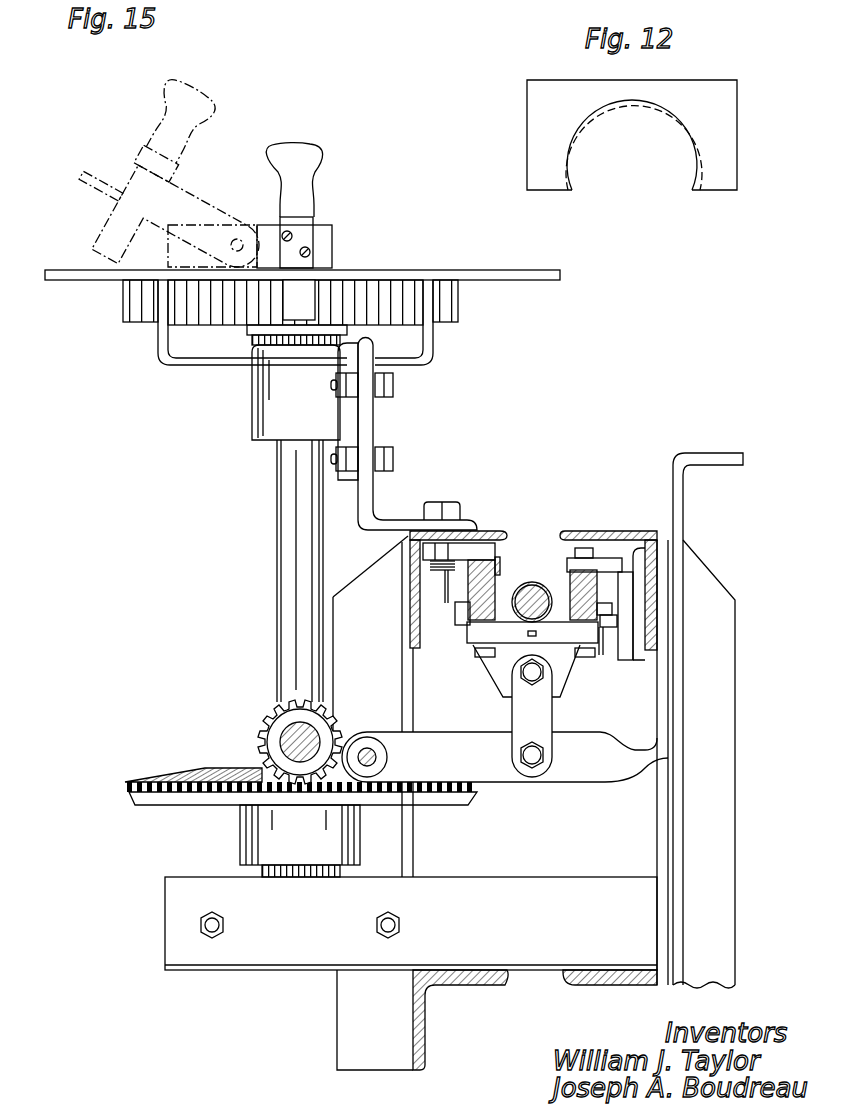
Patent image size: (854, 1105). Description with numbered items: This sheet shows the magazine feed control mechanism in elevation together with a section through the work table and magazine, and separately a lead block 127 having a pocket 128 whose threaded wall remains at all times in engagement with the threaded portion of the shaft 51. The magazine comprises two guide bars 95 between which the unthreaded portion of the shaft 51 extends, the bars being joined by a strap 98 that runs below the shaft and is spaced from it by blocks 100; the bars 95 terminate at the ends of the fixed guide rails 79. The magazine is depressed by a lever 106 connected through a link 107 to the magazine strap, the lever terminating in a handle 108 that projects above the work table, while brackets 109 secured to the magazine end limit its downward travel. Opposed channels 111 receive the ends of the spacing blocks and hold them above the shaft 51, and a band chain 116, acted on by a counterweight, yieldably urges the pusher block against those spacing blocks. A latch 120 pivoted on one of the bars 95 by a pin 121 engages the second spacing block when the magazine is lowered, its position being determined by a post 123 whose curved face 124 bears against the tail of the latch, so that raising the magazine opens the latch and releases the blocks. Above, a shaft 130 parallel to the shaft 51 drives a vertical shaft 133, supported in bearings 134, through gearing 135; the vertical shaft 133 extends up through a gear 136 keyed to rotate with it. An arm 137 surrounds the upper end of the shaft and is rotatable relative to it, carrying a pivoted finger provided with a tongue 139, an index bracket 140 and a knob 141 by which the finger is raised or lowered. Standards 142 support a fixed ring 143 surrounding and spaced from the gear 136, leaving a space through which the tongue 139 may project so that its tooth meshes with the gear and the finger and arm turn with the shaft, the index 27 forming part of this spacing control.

In FIG. 15, the index 27 is at (420, 255).
In FIG. 15, the shaft 51 is at (530, 592).
In FIG. 15, the guide rails 79 is at (458, 629).
In FIG. 15, the guide bars 95 is at (455, 620).
In FIG. 15, the strap 98 is at (490, 672).
In FIG. 15, the blocks 100 is at (520, 633).
In FIG. 15, the lever 106 is at (505, 757).
In FIG. 15, the link 107 is at (555, 718).
In FIG. 15, the handle 108 is at (715, 456).
In FIG. 15, the brackets 109 is at (452, 598).
In FIG. 15, the channels 111 is at (455, 583).
In FIG. 15, the band chain 116 is at (543, 637).
In FIG. 15, the latch 120 is at (605, 560).
In FIG. 15, the pin 121 is at (590, 550).
In FIG. 15, the post 123 is at (643, 577).
In FIG. 15, the curved face 124 is at (625, 605).
In FIG. 12, the lead block 127 is at (533, 110).
In FIG. 12, the pocket 128 is at (634, 145).
In FIG. 15, the shaft 130 is at (310, 735).
In FIG. 15, the vertical shaft 133 is at (293, 530).
In FIG. 15, the bearings 134 is at (290, 397).
In FIG. 15, the gearing 135 is at (272, 743).
In FIG. 15, the gear 136 is at (458, 304).
In FIG. 15, the arm 137 is at (322, 240).
In FIG. 15, the tongue 139 is at (292, 302).
In FIG. 15, the index bracket 140 is at (292, 233).
In FIG. 15, the knob 141 is at (300, 160).
In FIG. 15, the standards 142 is at (410, 358).
In FIG. 15, the fixed ring 143 is at (500, 274).